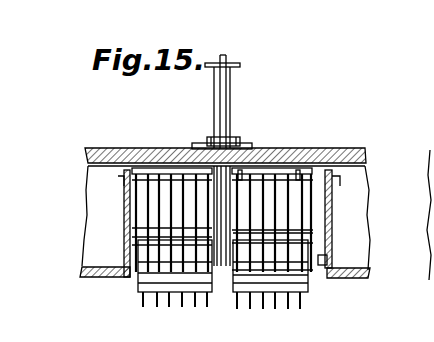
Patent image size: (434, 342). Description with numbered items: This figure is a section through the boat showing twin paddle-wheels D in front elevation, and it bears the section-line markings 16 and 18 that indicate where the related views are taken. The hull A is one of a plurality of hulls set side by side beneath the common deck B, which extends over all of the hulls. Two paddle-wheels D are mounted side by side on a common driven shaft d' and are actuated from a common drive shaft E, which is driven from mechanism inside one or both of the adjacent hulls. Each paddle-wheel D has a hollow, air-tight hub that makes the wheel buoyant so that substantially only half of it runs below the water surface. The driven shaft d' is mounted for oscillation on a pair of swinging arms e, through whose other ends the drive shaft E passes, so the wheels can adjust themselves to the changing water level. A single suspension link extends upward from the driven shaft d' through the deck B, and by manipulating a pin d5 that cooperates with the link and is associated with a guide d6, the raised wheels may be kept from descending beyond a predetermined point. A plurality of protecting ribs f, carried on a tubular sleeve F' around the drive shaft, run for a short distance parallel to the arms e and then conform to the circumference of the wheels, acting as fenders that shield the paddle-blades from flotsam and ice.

The deck B is at (85, 159).
The hull A is at (82, 268).
The drive shaft E is at (365, 150).
The paddle-wheel D is at (138, 290).
The central support column F' is at (248, 187).
The driven shaft d' is at (337, 253).
The pin d5 is at (210, 140).
The guide d6 is at (232, 82).
The arm e is at (243, 178).
The protecting rib f is at (308, 230).
The section line 16 is at (323, 148).
The section line 18 is at (275, 226).